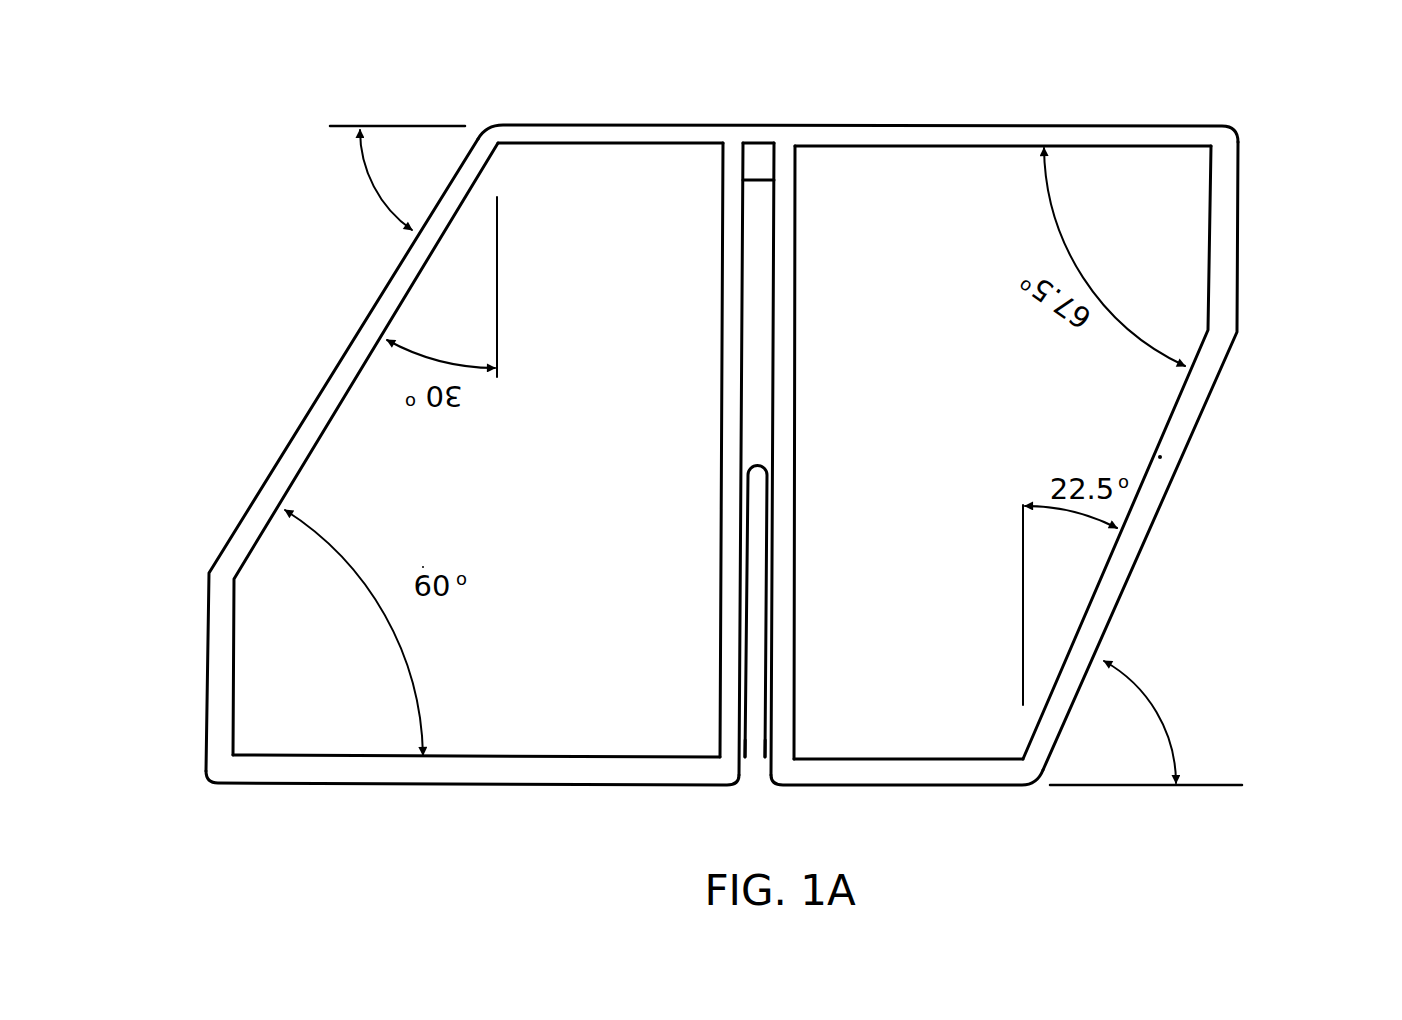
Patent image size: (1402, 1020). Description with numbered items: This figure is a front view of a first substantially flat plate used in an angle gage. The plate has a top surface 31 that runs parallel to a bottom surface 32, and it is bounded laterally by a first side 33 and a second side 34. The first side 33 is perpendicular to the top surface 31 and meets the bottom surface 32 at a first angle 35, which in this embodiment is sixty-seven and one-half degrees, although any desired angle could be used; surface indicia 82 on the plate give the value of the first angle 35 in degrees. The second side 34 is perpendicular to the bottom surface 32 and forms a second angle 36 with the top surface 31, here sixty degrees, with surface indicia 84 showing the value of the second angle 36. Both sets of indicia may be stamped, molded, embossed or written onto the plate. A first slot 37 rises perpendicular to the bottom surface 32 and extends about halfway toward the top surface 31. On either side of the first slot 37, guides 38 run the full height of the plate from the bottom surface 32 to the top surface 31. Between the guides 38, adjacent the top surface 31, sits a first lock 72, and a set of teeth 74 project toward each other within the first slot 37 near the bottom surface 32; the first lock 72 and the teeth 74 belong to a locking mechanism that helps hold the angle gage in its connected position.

The top surface 31 is at (858, 88).
The bottom surface 32 is at (624, 805).
The first side 33 is at (1193, 456).
The second side 34 is at (307, 455).
The first angle 35 is at (1146, 718).
The second angle 36 is at (361, 178).
The first slot 37 is at (697, 654).
The guides 38 is at (799, 420).
The first lock 72 is at (801, 113).
The set of teeth 74 is at (794, 799).
The surface indicia 82 is at (1200, 456).
The surface indicia 84 is at (328, 484).